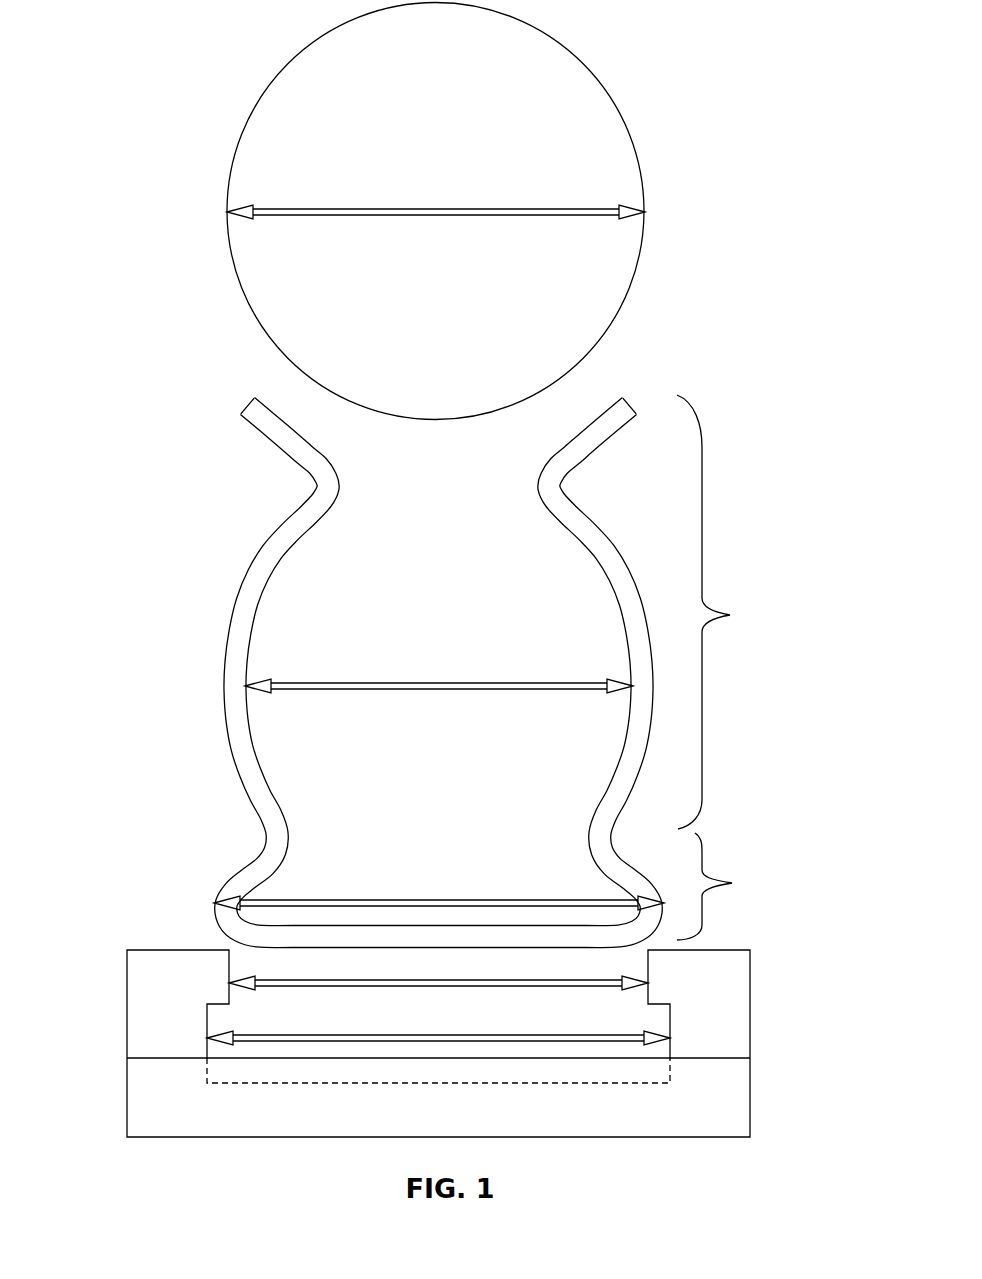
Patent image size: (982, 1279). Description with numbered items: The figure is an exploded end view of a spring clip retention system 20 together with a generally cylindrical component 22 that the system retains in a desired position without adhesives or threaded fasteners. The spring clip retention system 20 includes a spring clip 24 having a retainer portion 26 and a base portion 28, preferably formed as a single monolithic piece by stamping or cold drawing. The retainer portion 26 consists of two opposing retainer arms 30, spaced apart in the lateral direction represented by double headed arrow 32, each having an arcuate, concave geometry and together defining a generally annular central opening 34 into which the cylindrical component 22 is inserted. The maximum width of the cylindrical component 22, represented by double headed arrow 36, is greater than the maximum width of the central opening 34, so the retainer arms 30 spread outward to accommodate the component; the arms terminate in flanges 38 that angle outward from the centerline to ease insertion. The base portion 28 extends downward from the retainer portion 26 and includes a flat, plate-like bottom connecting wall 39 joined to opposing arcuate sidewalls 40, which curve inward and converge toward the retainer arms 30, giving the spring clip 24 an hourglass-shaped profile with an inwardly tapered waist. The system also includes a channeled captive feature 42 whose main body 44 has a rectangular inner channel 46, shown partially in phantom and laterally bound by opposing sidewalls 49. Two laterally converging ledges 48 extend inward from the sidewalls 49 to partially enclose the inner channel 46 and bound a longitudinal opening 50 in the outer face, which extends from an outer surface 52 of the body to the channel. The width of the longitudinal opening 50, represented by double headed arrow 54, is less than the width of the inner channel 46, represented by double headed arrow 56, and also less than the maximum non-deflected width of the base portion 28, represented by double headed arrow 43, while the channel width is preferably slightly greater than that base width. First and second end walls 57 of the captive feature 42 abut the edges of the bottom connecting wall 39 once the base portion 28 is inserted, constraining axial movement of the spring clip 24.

The spring clip retention system 20 is at (158, 64).
The generally cylindrical component 22 is at (421, 176).
The spring clip 24 is at (248, 570).
The retainer portion 26 is at (726, 612).
The base portion 28 is at (726, 886).
The retainer arms 30 is at (300, 528).
The double headed arrow 32 is at (389, 682).
The central opening 34 is at (422, 733).
The double headed arrow 36 is at (524, 208).
The flanges 38 is at (280, 428).
The bottom connecting wall 39 is at (447, 935).
The sidewalls 40 is at (272, 846).
The captive feature 42 is at (129, 945).
The double headed arrow 43 is at (386, 897).
The main body 44 is at (742, 1003).
The inner channel 46 is at (440, 1075).
The ledges 48 is at (188, 991).
The sidewalls 49 is at (164, 1044).
The longitudinal opening 50 is at (435, 974).
The outer surface 52 is at (179, 949).
The double headed arrow 54 is at (458, 984).
The double headed arrow 56 is at (328, 1036).
The end walls 57 is at (542, 1072).